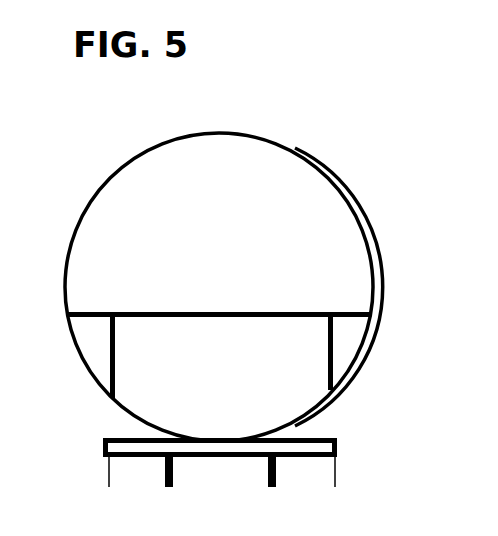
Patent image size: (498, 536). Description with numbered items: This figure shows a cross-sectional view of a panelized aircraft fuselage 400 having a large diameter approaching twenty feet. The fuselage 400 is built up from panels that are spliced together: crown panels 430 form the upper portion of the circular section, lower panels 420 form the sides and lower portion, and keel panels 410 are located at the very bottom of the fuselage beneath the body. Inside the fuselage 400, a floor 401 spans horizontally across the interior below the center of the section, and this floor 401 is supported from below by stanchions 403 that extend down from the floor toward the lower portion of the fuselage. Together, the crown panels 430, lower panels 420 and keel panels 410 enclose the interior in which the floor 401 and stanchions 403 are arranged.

The panelized aircraft fuselage 400 is at (257, 292).
The crown panels 430 is at (255, 137).
The lower panels 420 is at (373, 287).
The floor 401 is at (257, 312).
The stanchions 403 is at (116, 362).
The keel panels 410 is at (318, 408).